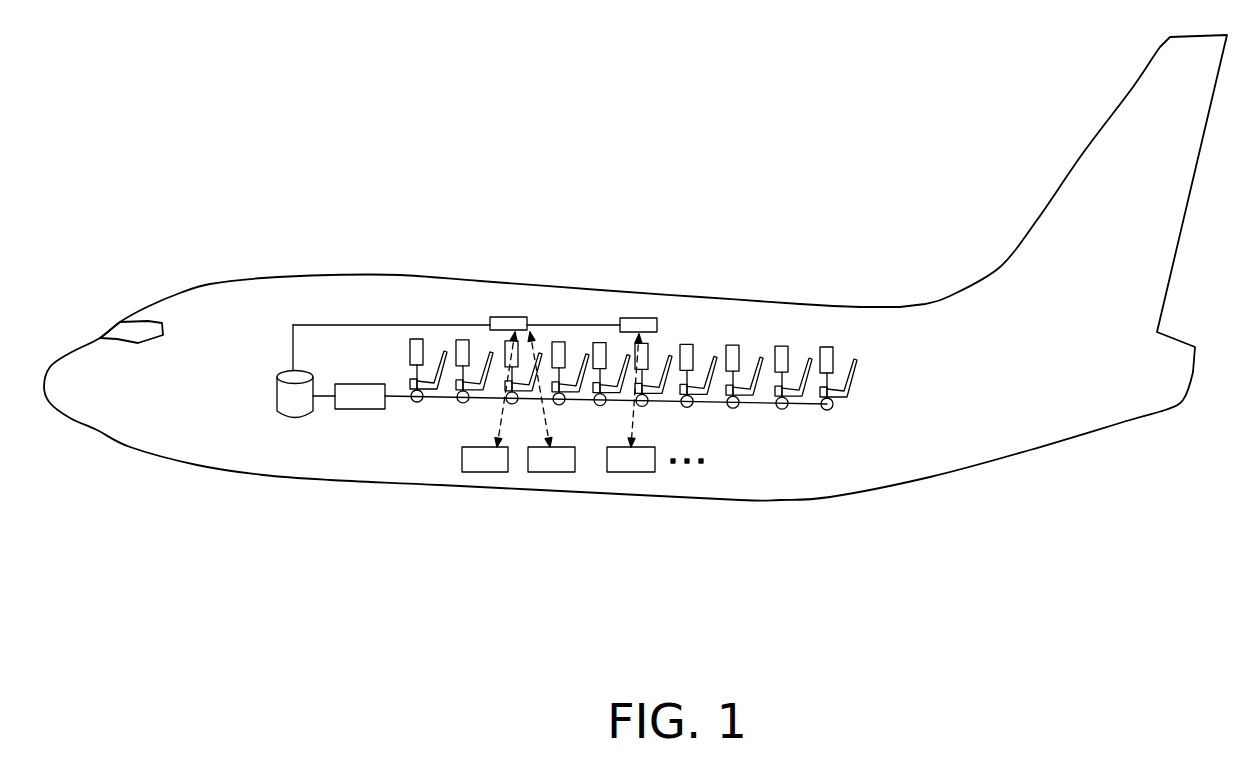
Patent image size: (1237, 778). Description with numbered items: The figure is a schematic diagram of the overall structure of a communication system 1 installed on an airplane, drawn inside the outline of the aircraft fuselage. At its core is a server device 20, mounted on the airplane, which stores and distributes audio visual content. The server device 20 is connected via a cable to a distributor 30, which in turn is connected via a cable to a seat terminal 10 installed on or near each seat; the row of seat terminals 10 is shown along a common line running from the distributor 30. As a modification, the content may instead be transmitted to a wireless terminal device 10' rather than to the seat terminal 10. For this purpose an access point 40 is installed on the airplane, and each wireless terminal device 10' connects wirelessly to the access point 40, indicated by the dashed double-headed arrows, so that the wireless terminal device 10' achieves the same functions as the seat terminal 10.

The communication system 1 is at (640, 235).
The seat terminal 10 is at (621, 333).
The wireless terminal device 10' is at (582, 459).
The server device 20 is at (283, 407).
The distributor 30 is at (350, 397).
The access point 40 is at (618, 317).